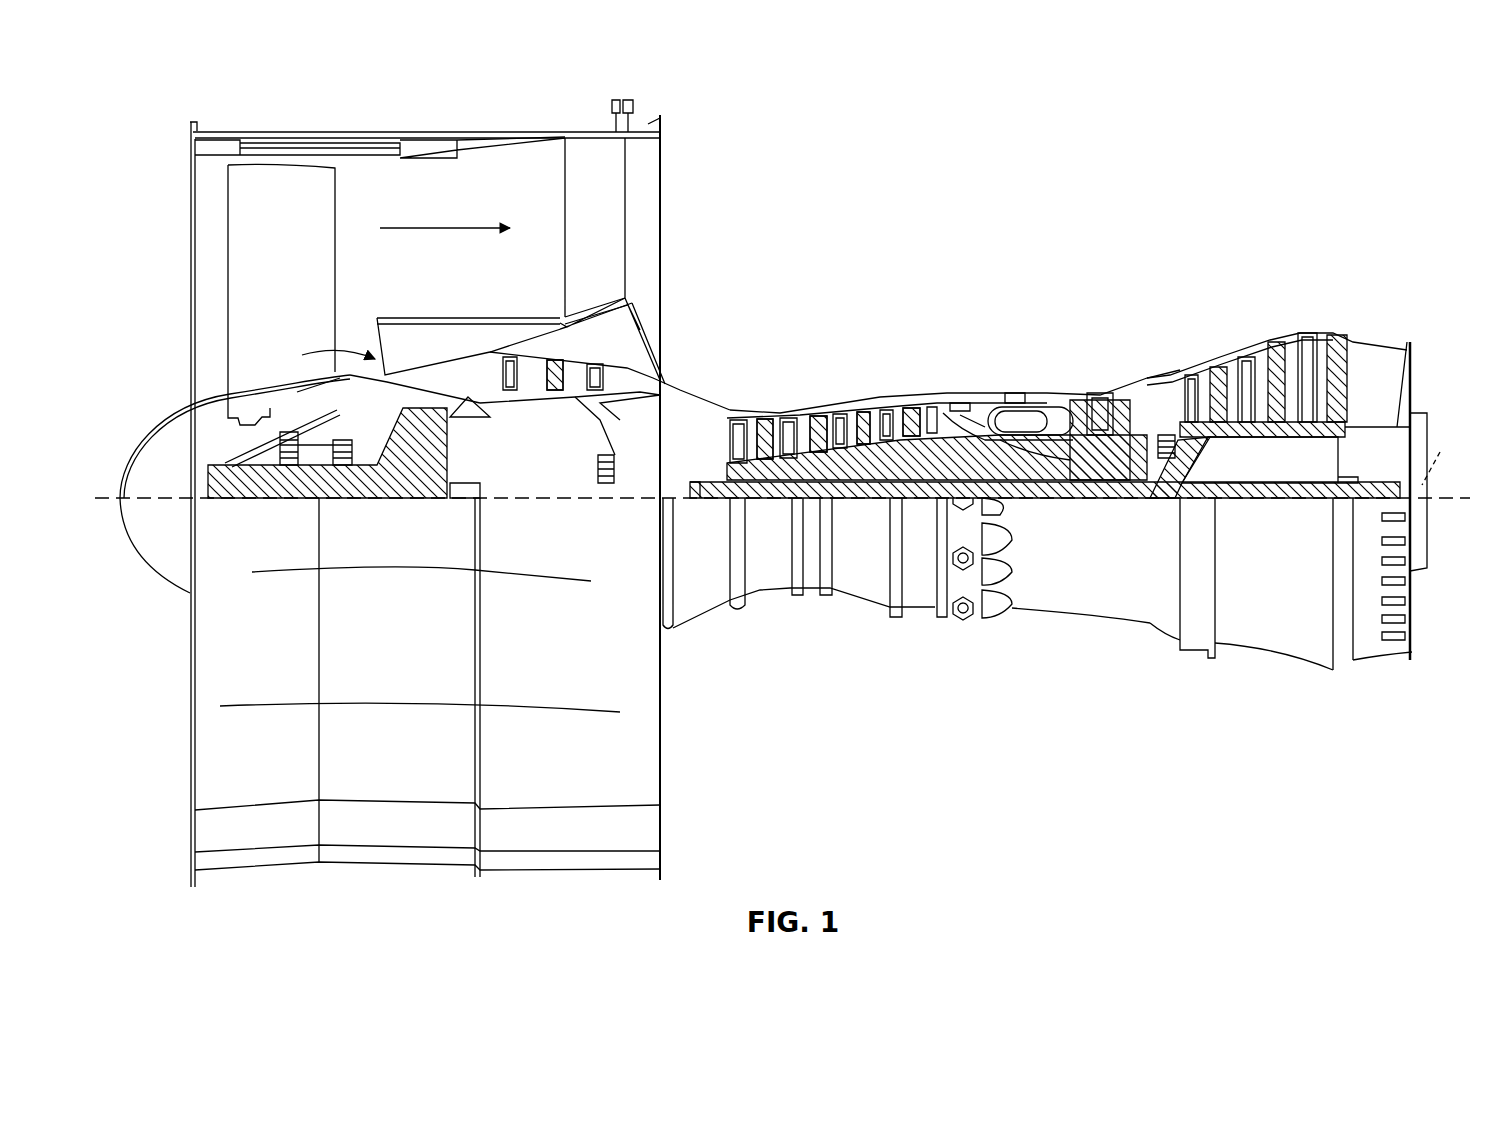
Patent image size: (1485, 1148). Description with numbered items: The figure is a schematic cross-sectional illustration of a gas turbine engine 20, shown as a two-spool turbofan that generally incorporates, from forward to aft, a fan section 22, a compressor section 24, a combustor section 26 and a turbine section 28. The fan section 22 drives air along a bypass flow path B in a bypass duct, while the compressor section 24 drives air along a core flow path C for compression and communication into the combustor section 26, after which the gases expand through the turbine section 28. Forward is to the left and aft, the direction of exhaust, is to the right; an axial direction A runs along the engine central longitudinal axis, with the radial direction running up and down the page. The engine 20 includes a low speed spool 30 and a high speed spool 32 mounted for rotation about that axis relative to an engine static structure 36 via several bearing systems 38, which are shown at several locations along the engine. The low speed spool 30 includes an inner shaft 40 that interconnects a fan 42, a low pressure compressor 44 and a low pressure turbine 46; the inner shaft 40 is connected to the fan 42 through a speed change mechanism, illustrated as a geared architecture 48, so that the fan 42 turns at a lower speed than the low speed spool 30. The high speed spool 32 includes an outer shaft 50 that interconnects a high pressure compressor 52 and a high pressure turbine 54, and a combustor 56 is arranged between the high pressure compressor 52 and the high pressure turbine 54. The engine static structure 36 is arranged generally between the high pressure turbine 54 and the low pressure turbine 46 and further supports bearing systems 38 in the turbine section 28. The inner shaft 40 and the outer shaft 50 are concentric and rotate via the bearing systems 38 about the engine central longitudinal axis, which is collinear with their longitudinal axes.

The gas turbine engine 20 is at (1236, 168).
The fan section 22 is at (340, 102).
The compressor section 24 is at (853, 356).
The combustor section 26 is at (1015, 356).
The turbine section 28 is at (1167, 334).
The low speed spool 30 is at (880, 502).
The high speed spool 32 is at (935, 450).
The engine static structure 36 is at (922, 617).
The bearing systems 38 is at (290, 466).
The inner shaft 40 is at (676, 498).
The fan 42 is at (276, 251).
The low pressure compressor 44 is at (578, 372).
The low pressure turbine 46 is at (1268, 353).
The geared architecture 48 is at (420, 470).
The outer shaft 50 is at (1042, 496).
The high pressure compressor 52 is at (812, 423).
The high pressure turbine 54 is at (1100, 393).
The combustor 56 is at (1026, 417).
The axial direction A is at (1443, 450).
The bypass flow path B is at (450, 226).
The core flow path C is at (313, 349).